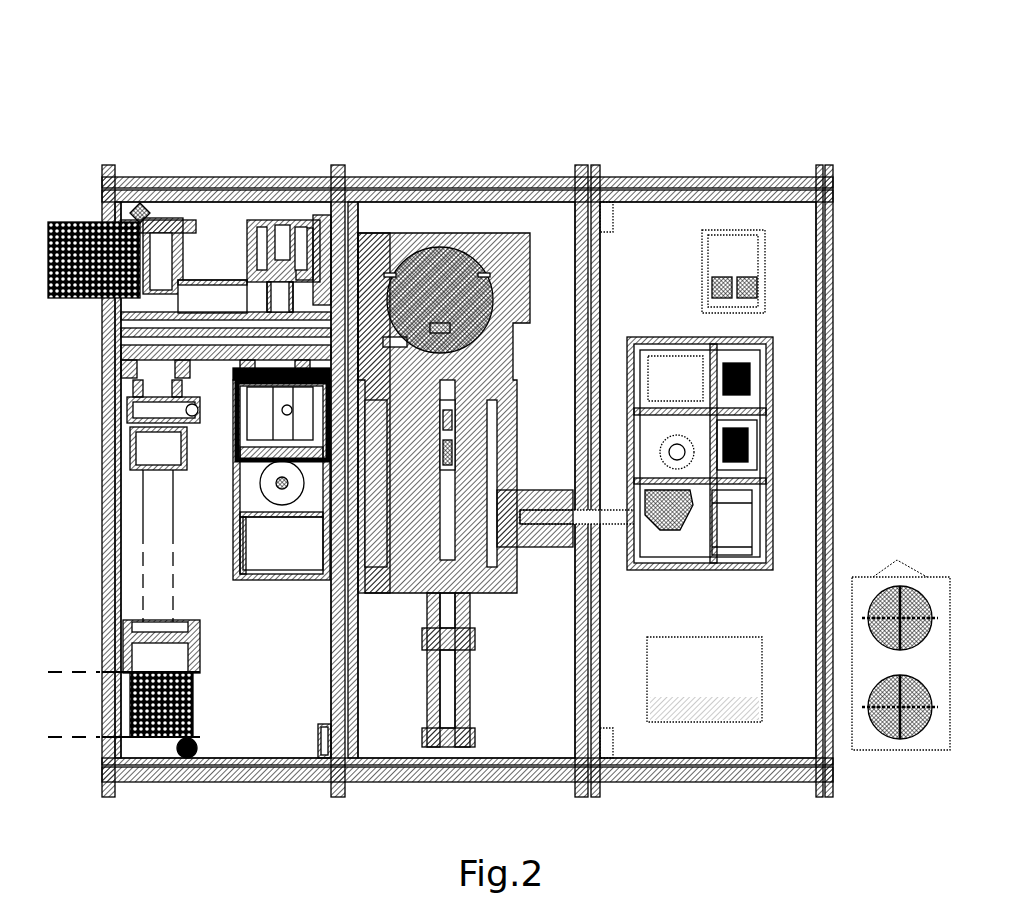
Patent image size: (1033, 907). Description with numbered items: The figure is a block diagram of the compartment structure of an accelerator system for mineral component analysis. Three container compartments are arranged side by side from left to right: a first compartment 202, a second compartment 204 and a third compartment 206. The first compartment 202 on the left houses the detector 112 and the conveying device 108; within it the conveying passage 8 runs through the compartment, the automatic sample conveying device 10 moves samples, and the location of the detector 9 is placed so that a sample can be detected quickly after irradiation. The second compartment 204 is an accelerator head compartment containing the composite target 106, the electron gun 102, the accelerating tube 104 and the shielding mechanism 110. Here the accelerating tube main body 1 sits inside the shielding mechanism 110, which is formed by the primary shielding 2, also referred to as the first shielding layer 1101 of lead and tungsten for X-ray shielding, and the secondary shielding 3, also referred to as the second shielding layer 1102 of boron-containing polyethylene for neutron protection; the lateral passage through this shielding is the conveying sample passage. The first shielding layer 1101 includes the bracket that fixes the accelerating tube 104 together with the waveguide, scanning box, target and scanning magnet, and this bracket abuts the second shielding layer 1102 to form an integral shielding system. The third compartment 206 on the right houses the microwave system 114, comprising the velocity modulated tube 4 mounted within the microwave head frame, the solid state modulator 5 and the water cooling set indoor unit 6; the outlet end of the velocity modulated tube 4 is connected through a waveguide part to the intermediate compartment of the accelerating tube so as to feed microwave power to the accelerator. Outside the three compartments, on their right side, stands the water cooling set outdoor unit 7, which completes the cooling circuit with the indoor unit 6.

The accelerating tube main body 1 is at (471, 320).
The primary shielding 2 is at (455, 232).
The secondary shielding 3 is at (395, 232).
The velocity modulated tube 4 is at (670, 437).
The solid state modulator 5 is at (722, 272).
The water cooling set indoor unit 6 is at (702, 680).
The water cooling set outdoor unit 7 is at (902, 577).
The conveying passage 8 is at (286, 338).
The detector location 9 is at (280, 487).
The automatic sample conveying device 10 is at (215, 333).
The electron gun 102 is at (430, 520).
The accelerating tube 104 is at (476, 320).
The composite target 106 is at (440, 400).
The conveying device 108 is at (226, 246).
The shielding mechanism 110 is at (445, 320).
The detector 112 is at (271, 520).
The microwave system 114 is at (767, 483).
The first shielding layer 1101 is at (460, 222).
The second shielding layer 1102 is at (424, 342).
The first compartment 202 is at (237, 730).
The second compartment 204 is at (498, 728).
The third compartment 206 is at (772, 742).